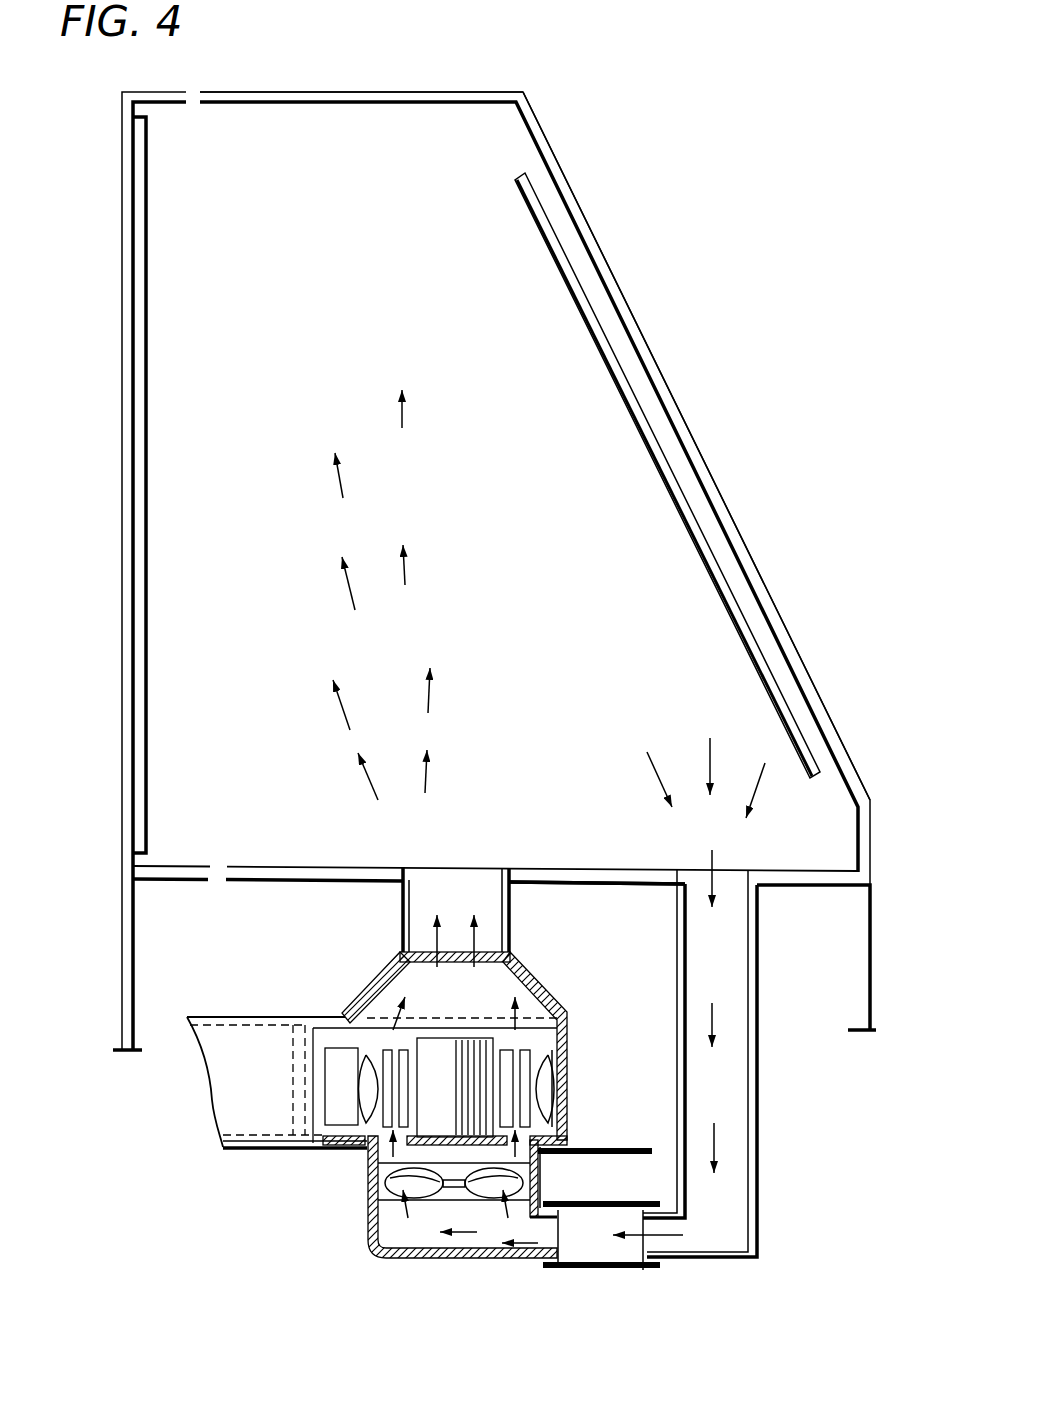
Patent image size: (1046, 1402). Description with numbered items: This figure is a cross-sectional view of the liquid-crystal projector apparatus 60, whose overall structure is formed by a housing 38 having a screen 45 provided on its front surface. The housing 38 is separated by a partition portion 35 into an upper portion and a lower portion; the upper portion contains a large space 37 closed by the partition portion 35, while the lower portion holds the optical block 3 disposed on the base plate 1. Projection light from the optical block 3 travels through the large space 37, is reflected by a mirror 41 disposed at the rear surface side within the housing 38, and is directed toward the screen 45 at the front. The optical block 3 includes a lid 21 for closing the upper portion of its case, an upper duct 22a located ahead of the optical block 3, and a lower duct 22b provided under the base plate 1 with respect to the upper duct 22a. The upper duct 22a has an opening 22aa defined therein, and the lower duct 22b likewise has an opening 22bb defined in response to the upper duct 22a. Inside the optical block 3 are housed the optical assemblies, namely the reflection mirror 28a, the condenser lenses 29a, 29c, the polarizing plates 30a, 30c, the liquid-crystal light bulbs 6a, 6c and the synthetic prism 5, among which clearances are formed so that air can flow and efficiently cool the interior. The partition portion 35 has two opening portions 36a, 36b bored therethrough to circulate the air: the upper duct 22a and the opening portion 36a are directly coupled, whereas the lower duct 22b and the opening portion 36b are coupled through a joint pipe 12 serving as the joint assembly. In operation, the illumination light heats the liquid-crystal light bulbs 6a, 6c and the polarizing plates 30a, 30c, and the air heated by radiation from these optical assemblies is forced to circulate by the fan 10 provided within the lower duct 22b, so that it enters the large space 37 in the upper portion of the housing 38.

The base plate 1 is at (627, 1147).
The optical block 3 is at (580, 1093).
The synthetic prism 5 is at (437, 1050).
The liquid-crystal light bulb 6a is at (403, 1048).
The liquid-crystal light bulb 6c is at (503, 1050).
The fan 10 is at (390, 1177).
The joint pipe 12 is at (643, 1270).
The lid 21 is at (222, 1017).
The upper duct 22a is at (533, 968).
The opening 22aa is at (488, 950).
The lower duct 22b is at (440, 1253).
The opening 22bb is at (560, 1240).
The reflection mirror 28a is at (327, 1060).
The condenser lens 29a is at (370, 1058).
The condenser lens 29c is at (547, 1060).
The polarizing plate 30a is at (385, 1047).
The polarizing plate 30c is at (530, 1050).
The partition portion 35 is at (582, 878).
The opening portion 36a is at (467, 880).
The opening portion 36b is at (695, 885).
The large space 37 is at (384, 125).
The housing 38 is at (563, 178).
The mirror 41 is at (718, 548).
The screen 45 is at (121, 425).
The liquid-crystal projector apparatus 60 is at (798, 273).